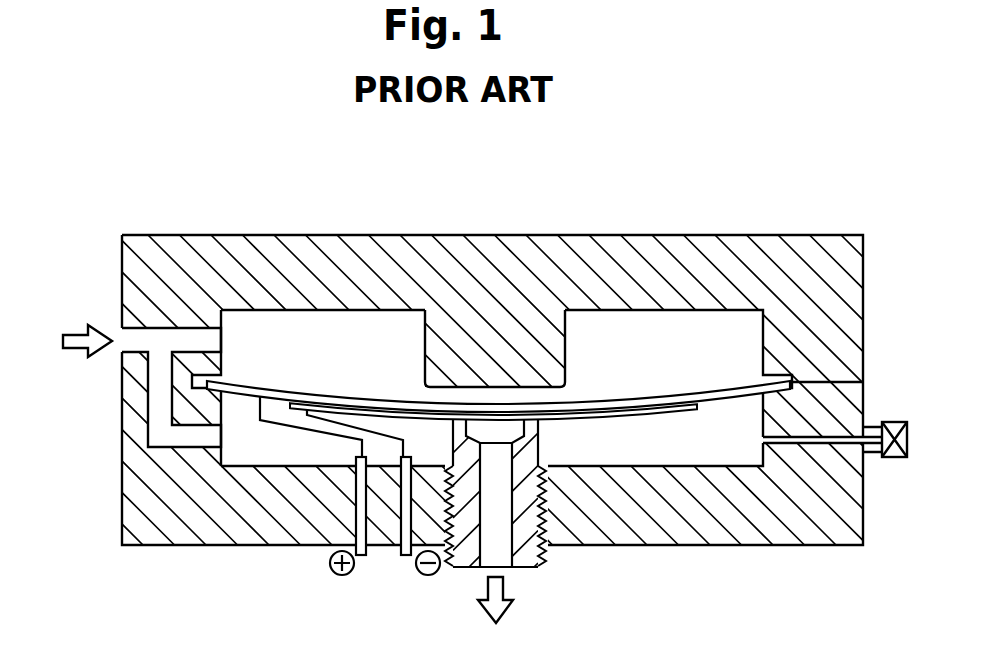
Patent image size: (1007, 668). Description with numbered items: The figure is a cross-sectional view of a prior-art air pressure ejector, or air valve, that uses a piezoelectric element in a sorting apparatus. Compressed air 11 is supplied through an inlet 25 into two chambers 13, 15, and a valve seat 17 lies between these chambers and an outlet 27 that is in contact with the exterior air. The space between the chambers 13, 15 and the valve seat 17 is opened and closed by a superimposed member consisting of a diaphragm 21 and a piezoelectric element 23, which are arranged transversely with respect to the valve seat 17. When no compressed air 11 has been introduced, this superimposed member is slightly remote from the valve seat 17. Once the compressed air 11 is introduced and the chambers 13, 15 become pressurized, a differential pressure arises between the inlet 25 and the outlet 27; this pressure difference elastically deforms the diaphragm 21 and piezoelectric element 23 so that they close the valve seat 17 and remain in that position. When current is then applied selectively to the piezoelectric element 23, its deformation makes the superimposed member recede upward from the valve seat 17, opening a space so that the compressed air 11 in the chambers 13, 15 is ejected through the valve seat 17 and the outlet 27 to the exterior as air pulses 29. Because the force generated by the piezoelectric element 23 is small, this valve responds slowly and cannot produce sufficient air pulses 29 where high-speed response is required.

The compressed air 11 is at (70, 340).
The chamber 13 is at (301, 350).
The chamber 15 is at (682, 350).
The valve seat 17 is at (538, 420).
The diaphragm 21 is at (597, 400).
The piezoelectric element 23 is at (635, 412).
The inlet 25 is at (142, 343).
The outlet 27 is at (500, 526).
The air pulses 29 is at (495, 618).